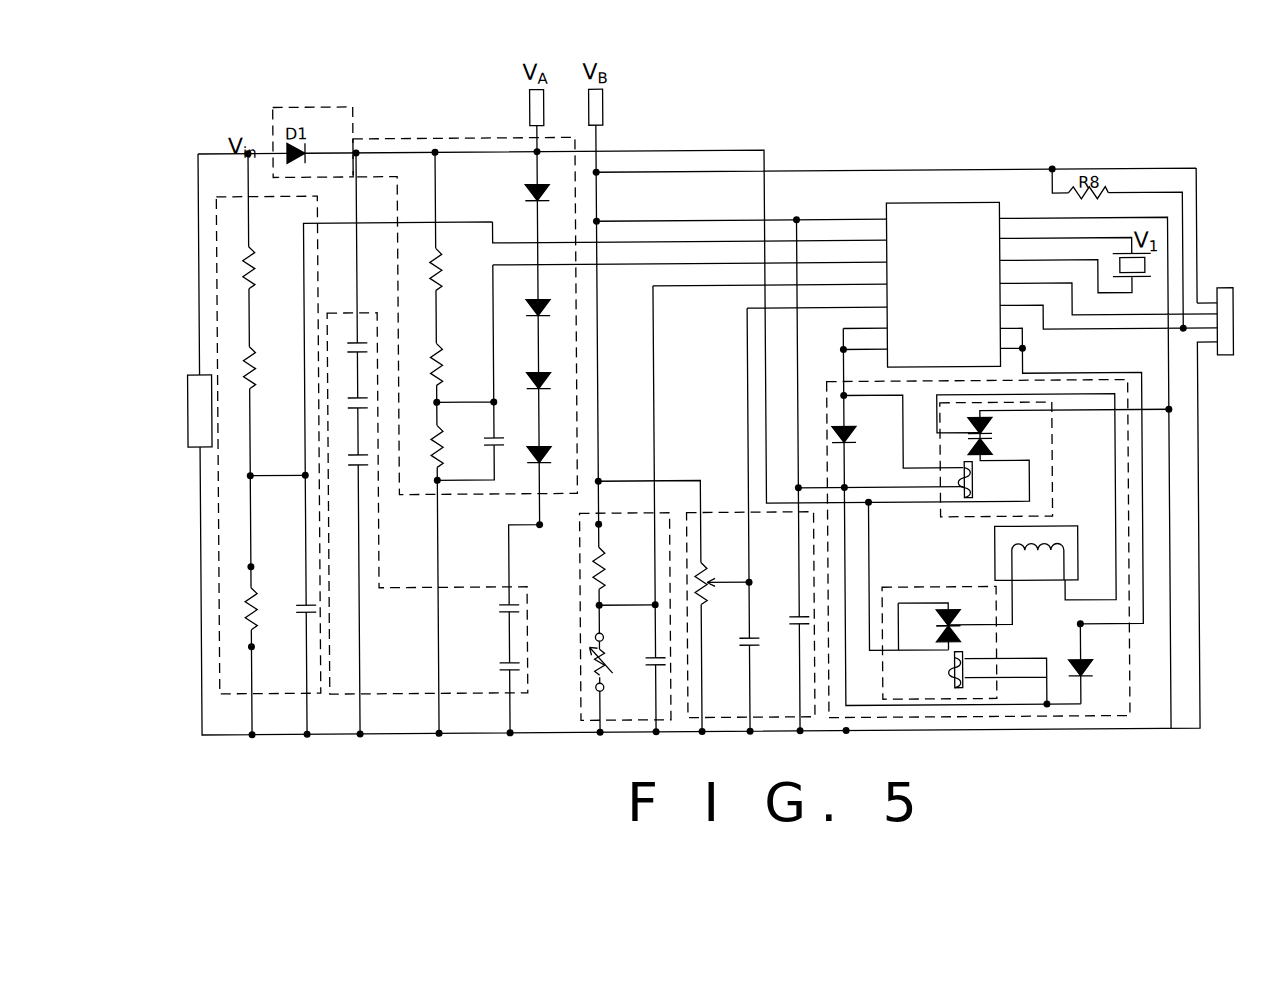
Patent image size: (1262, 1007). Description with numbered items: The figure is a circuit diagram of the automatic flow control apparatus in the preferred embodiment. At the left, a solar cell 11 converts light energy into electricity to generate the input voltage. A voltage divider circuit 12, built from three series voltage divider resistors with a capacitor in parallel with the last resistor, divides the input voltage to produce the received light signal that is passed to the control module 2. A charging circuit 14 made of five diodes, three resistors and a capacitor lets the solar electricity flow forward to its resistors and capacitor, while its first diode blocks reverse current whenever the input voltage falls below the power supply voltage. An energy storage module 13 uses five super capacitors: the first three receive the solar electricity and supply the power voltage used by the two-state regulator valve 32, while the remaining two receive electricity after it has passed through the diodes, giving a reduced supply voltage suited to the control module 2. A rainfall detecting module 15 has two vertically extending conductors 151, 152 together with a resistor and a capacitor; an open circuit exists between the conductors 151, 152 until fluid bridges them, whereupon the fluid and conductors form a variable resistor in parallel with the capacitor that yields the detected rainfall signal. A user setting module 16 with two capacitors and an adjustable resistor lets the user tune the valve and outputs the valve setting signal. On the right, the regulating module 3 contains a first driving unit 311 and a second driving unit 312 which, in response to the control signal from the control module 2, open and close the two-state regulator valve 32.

The solar cell 11 is at (197, 425).
The voltage divider circuit 12 is at (214, 207).
The energy storage module 13 is at (463, 695).
The charging circuit 14 is at (398, 207).
The rainfall detecting module 15 is at (645, 516).
The conductor 151 is at (601, 693).
The conductor 152 is at (592, 638).
The user setting module 16 is at (728, 516).
The control module 2 is at (935, 208).
The regulating module 3 is at (1129, 687).
The first driving unit 311 is at (1056, 464).
The second driving unit 312 is at (930, 700).
The two-state regulator valve 32 is at (1075, 569).